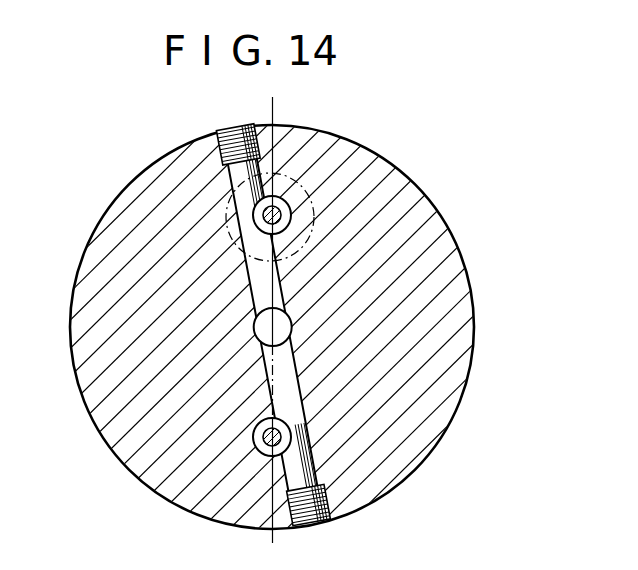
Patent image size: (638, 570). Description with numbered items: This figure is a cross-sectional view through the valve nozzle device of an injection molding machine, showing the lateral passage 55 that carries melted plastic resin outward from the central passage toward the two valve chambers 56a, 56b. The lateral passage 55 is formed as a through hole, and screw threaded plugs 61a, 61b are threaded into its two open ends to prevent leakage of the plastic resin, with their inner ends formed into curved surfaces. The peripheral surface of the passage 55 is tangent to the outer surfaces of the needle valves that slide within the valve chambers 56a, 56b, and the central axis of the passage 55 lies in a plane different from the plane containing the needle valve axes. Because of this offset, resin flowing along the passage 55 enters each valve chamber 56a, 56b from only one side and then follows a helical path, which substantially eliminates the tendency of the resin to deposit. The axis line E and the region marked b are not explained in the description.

The lateral passage 55 is at (290, 392).
The screw threaded plug 61a is at (220, 131).
The screw threaded plug 61b is at (307, 510).
The valve chamber 56a is at (285, 207).
The valve chamber 56b is at (257, 432).
The axis E is at (275, 113).
The region b is at (217, 242).